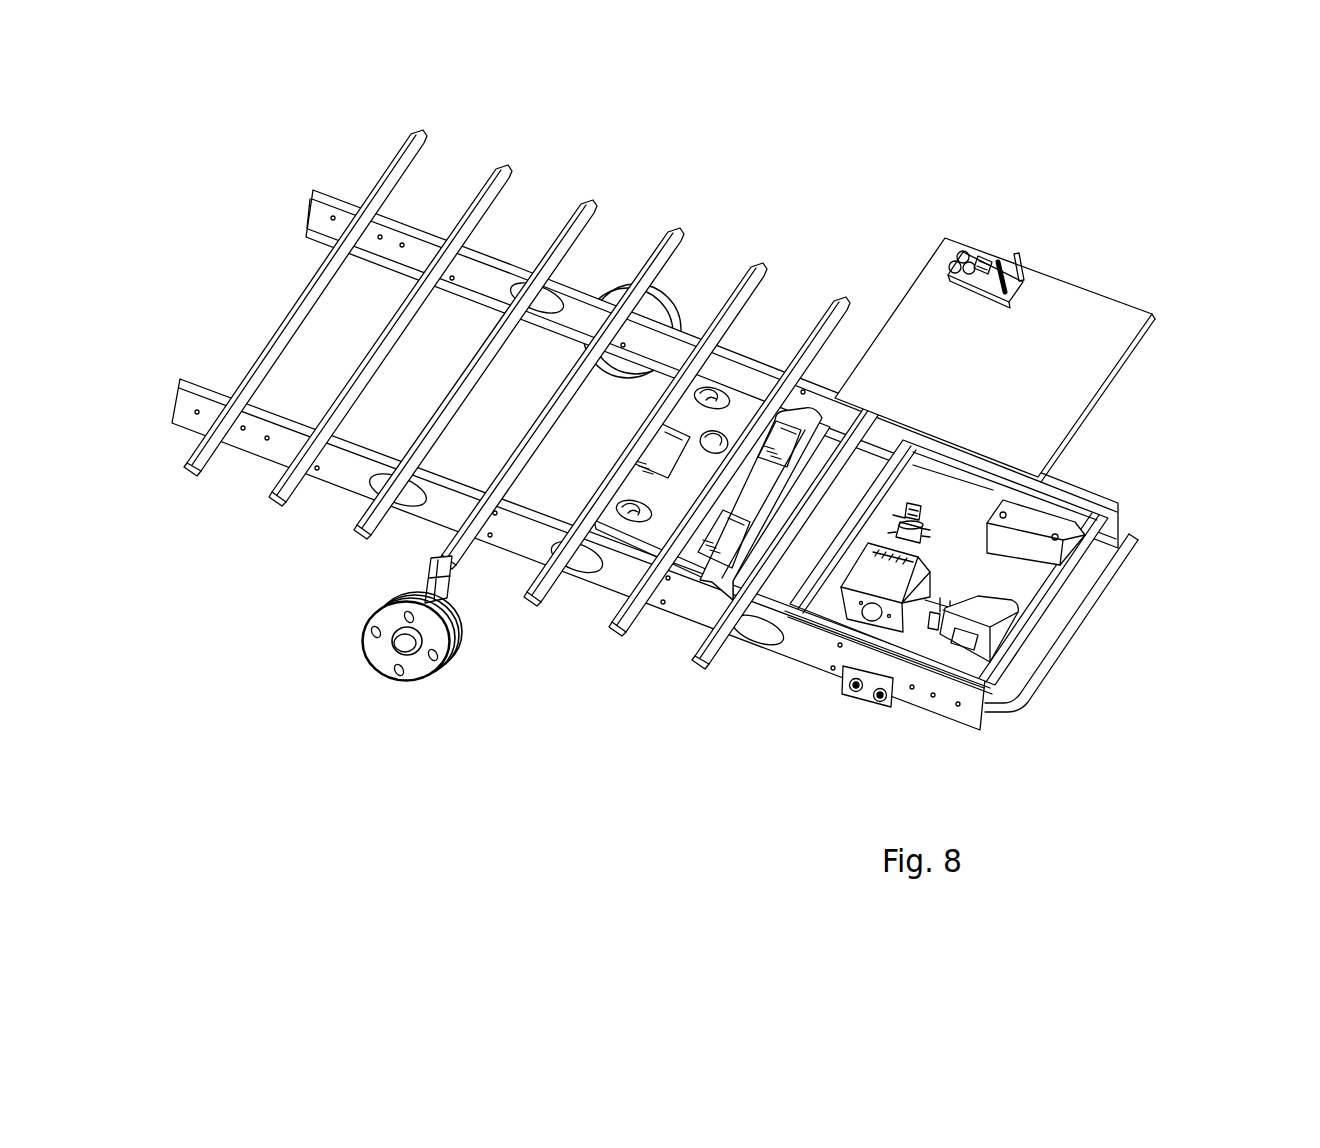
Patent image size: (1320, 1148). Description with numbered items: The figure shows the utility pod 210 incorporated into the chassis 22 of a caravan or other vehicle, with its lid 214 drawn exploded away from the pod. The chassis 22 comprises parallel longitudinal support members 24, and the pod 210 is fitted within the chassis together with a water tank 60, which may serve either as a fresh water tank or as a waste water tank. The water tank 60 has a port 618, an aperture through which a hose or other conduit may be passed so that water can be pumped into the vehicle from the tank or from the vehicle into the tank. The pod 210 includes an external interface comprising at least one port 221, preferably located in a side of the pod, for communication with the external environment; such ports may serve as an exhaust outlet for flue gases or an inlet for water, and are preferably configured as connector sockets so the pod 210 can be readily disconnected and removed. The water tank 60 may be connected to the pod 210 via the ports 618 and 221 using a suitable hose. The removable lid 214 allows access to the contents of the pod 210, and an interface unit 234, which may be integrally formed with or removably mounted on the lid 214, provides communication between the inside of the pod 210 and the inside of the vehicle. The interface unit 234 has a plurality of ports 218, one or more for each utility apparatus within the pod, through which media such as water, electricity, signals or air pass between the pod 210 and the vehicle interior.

The chassis 22 is at (512, 264).
The longitudinal support members 24 is at (662, 345).
The water tank 60 is at (750, 398).
The port 618 is at (637, 508).
The removable lid 214 is at (1001, 390).
The interface unit 234 is at (961, 250).
The ports 218 is at (977, 250).
The pod 210 is at (1068, 583).
The port 221 is at (835, 688).